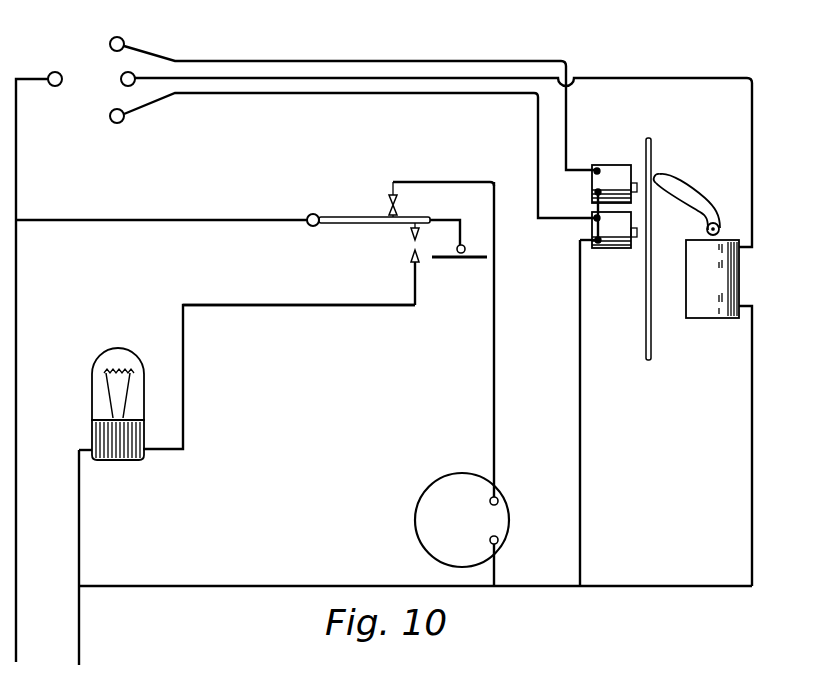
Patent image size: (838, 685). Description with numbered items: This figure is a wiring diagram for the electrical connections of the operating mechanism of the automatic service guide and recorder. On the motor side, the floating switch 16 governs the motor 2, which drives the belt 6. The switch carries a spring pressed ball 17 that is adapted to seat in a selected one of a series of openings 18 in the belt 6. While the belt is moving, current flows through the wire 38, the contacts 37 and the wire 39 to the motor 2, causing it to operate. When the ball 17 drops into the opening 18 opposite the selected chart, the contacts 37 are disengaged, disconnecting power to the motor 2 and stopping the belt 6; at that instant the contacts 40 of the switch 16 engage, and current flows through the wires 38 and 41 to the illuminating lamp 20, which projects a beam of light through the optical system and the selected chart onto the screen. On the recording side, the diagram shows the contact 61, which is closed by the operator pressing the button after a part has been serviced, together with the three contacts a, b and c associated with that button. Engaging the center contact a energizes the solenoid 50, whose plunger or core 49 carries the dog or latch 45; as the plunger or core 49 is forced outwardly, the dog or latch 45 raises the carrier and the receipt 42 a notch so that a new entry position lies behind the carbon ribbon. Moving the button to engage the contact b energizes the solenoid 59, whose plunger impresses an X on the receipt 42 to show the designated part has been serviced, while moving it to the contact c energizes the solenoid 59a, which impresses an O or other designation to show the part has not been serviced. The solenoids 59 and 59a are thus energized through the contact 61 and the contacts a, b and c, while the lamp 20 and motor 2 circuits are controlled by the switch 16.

The contact 61 is at (54, 72).
The contact b is at (126, 41).
The center contact a is at (134, 70).
The contact c is at (125, 117).
The wire 38 is at (230, 219).
The contacts 37 is at (388, 203).
The wire 39 is at (450, 181).
The spring pressed ball 17 is at (463, 244).
The floating switch 16 is at (373, 240).
The contacts 40 is at (412, 247).
The openings 18 is at (446, 267).
The belt 6 is at (477, 267).
The wire 41 is at (370, 306).
The illuminating lamp 20 is at (106, 356).
The motor 2 is at (452, 517).
The solenoid 59 is at (612, 168).
The solenoid 59a is at (615, 248).
The receipt 42 is at (651, 150).
The dog or latch 45 is at (684, 197).
The plunger or core 49 is at (705, 233).
The solenoid 50 is at (725, 291).